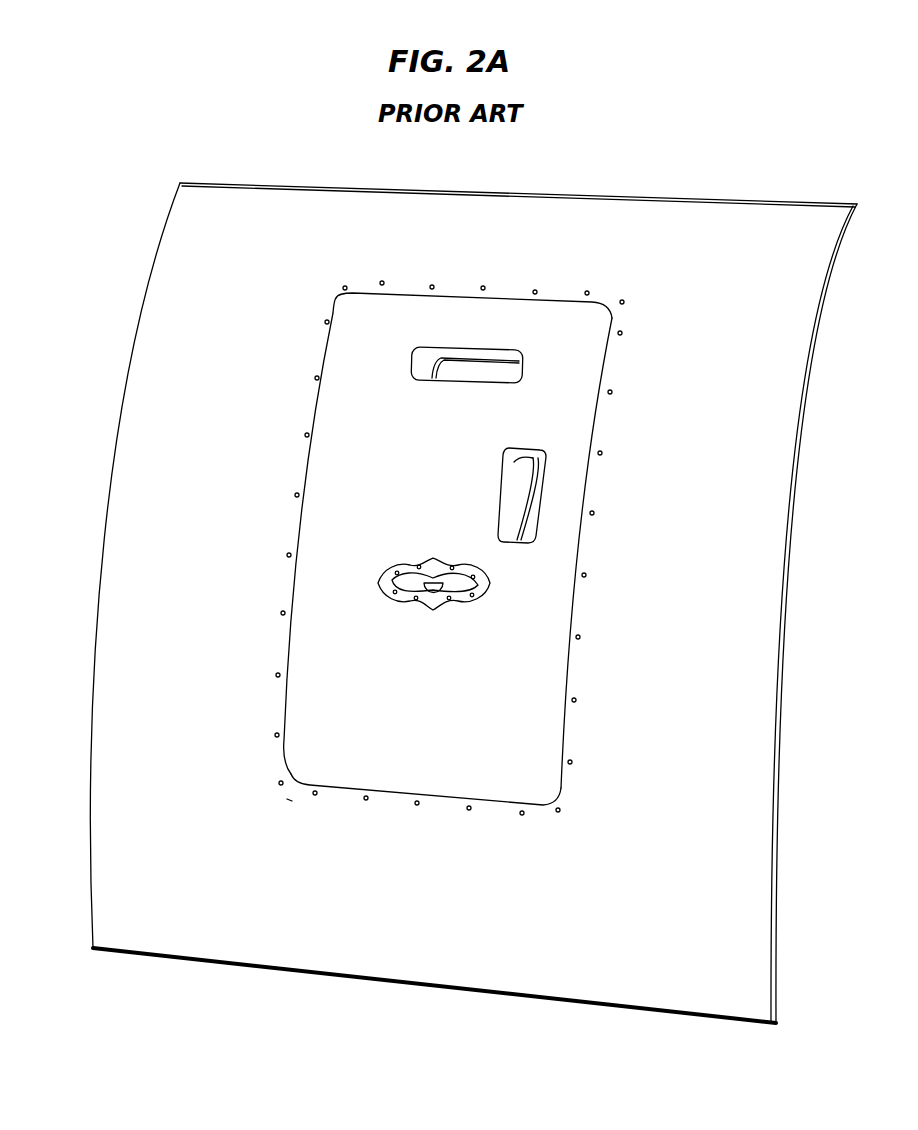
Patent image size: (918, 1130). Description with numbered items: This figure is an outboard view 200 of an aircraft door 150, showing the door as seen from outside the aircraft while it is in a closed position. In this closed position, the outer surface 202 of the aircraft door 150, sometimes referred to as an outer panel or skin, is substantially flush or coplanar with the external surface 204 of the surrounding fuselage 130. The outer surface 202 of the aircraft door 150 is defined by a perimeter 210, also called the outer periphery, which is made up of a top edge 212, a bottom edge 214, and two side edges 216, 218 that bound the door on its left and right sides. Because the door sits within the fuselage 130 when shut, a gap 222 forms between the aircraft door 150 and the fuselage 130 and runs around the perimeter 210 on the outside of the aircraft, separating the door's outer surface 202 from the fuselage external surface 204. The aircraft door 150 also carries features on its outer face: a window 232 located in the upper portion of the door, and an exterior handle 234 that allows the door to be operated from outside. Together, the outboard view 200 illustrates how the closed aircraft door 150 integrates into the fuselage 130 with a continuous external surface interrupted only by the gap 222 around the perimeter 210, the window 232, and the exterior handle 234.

The outboard view 200 is at (750, 154).
The outer surface 202 is at (447, 603).
The external surface 204 is at (147, 455).
The fuselage 130 is at (128, 535).
The perimeter 210 is at (323, 339).
The top edge 212 is at (453, 297).
The bottom edge 214 is at (421, 795).
The side edge 216 is at (318, 422).
The side edge 218 is at (594, 443).
The gap 222 is at (288, 636).
The window 232 is at (498, 372).
The exterior handle 234 is at (414, 580).
The aircraft door 150 is at (549, 622).